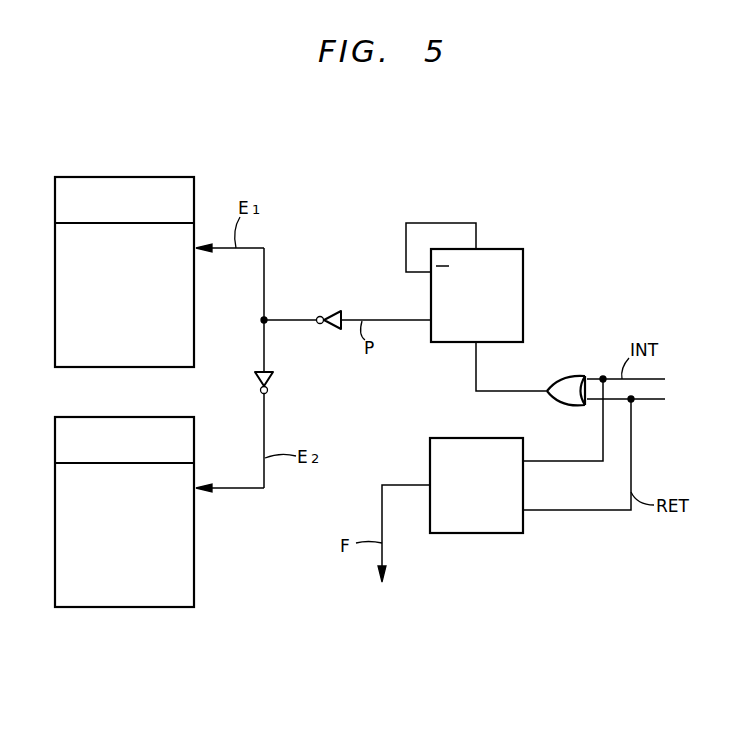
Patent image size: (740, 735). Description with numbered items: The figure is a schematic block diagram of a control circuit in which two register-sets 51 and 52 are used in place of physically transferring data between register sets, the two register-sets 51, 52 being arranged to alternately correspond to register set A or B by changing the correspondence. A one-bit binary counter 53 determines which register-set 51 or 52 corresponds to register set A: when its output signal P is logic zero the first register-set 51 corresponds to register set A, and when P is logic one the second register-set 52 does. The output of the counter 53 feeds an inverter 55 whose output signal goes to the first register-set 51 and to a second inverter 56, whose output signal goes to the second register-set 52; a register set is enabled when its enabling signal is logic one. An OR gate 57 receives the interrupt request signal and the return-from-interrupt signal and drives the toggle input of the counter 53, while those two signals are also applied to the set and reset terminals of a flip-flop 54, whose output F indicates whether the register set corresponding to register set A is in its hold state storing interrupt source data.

The first register-set 51 is at (152, 177).
The second register-set 52 is at (55, 506).
The 1-bit binary counter 53 is at (497, 249).
The flip-flop 54 is at (475, 533).
The inverter 55 is at (323, 315).
The second inverter 56 is at (268, 390).
The OR gate 57 is at (571, 376).